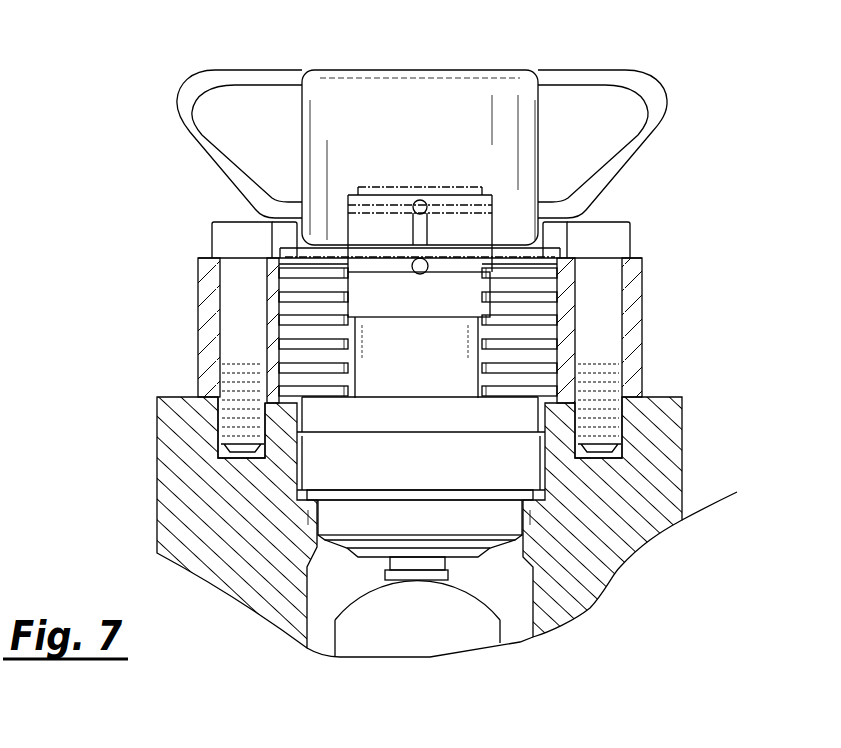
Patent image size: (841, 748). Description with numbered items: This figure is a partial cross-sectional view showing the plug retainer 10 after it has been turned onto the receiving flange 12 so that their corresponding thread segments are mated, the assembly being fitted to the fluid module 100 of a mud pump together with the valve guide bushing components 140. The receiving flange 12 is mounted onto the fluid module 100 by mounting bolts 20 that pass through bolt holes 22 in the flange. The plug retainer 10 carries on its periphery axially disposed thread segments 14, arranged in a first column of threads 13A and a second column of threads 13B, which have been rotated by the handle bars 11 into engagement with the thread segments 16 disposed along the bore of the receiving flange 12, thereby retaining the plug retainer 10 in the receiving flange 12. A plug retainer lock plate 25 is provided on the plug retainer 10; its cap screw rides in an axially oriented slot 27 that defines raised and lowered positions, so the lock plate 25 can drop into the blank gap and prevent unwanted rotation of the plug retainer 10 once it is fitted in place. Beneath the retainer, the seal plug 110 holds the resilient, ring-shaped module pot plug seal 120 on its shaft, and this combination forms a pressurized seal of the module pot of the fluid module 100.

The plug retainer 10 is at (369, 146).
The handle bars 11 is at (613, 80).
The receiving flange 12 is at (633, 328).
The first column of threads 13A is at (295, 320).
The second column of threads 13B is at (537, 320).
The thread segments 14 is at (302, 263).
The thread segments 16 is at (597, 258).
The mounting bolts 20 is at (233, 238).
The bolt holes 22 is at (217, 325).
The plug retainer lock plate 25 is at (453, 302).
The slot 27 is at (420, 223).
The fluid module 100 is at (177, 476).
The seal plug 110 is at (436, 475).
The module pot plug seal 120 is at (480, 522).
The valve guide bushing components 140 is at (57, 6).